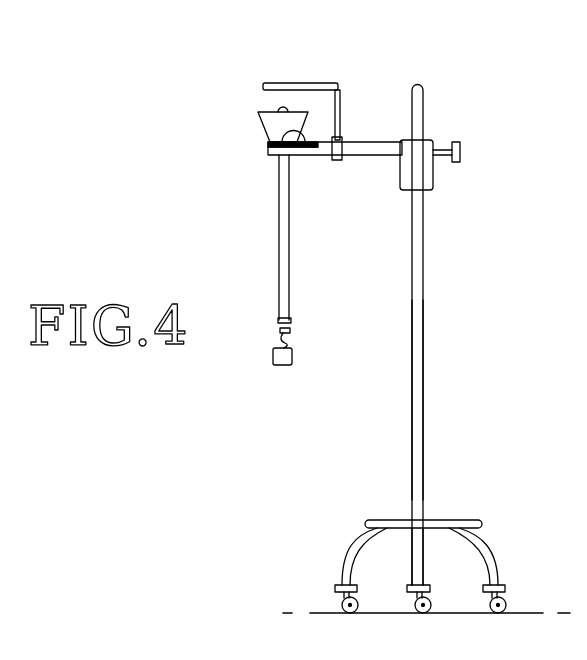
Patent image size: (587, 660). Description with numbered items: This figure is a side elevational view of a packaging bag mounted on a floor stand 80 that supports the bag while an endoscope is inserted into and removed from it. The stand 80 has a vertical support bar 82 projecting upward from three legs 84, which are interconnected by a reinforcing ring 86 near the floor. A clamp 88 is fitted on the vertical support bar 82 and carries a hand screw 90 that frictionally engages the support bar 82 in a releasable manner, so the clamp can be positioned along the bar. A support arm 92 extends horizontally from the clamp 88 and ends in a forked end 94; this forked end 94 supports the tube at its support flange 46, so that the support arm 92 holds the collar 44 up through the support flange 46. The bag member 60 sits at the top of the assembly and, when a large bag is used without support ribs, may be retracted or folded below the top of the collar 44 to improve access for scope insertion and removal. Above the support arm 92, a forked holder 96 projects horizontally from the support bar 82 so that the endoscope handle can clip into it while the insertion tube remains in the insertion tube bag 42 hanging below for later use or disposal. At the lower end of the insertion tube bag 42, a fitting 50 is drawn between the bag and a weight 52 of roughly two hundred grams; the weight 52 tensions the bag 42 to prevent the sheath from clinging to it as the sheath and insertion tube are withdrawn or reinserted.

The insertion tube bag 42 is at (278, 282).
The collar 44 is at (270, 150).
The support flange 46 is at (313, 153).
The fitting 50 is at (290, 330).
The weight 52 is at (293, 362).
The bag member 60 is at (266, 122).
The stand 80 is at (442, 282).
The vertical support bar 82 is at (425, 412).
The legs 84 is at (342, 567).
The reinforcing ring 86 is at (478, 522).
The clamp 88 is at (435, 175).
The hand screw 90 is at (460, 155).
The support arm 92 is at (360, 142).
The forked end 94 is at (267, 147).
The forked holder 96 is at (298, 83).